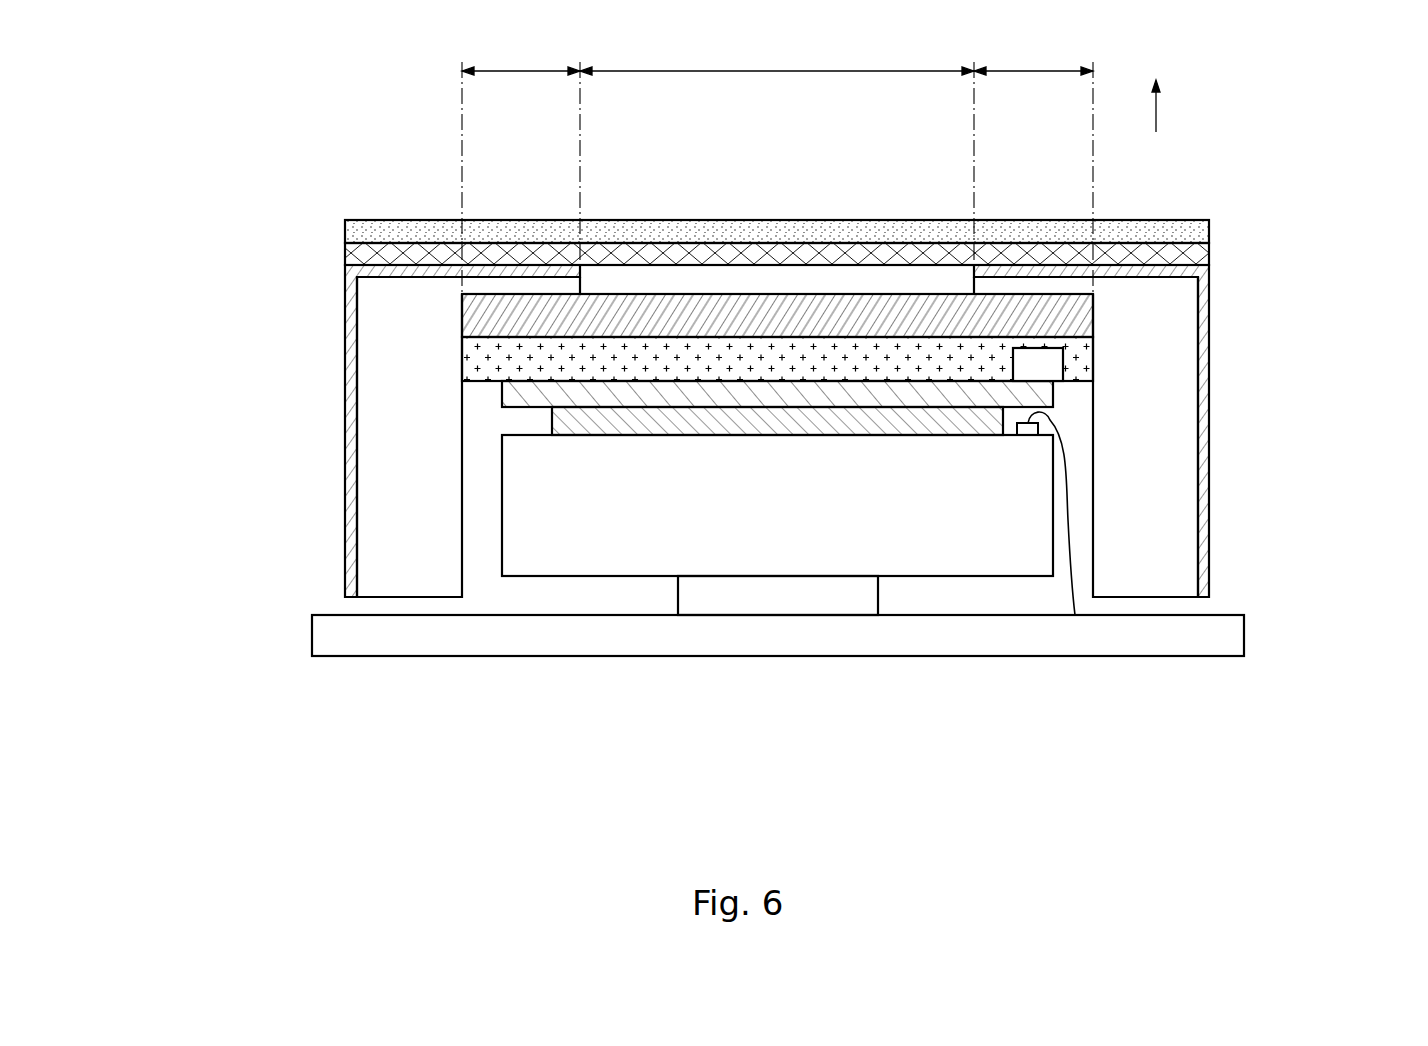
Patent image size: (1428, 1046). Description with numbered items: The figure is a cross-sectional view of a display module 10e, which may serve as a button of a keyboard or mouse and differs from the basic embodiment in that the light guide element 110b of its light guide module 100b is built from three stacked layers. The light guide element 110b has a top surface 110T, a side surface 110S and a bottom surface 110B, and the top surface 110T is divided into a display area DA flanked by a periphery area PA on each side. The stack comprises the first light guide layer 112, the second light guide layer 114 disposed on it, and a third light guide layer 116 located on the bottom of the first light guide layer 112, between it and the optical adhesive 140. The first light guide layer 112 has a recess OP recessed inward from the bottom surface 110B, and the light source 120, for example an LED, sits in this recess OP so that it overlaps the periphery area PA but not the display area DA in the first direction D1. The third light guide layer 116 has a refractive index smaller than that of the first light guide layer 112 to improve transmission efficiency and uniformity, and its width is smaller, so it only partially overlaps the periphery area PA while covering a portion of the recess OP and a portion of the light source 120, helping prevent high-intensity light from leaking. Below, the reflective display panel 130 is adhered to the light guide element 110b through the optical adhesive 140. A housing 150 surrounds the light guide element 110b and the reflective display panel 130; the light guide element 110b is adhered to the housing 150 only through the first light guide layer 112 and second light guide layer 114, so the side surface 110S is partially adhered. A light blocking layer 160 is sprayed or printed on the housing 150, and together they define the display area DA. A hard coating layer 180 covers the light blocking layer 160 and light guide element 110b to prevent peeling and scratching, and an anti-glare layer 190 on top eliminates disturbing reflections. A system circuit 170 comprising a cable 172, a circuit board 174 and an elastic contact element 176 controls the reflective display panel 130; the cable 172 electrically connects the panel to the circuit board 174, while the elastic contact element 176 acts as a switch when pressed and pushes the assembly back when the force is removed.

The display module 10e is at (250, 31).
The light guide module 100b is at (232, 68).
The light guide element 110b is at (942, 330).
The top surface 110T is at (1097, 243).
The side surface 110S is at (1093, 370).
The bottom surface 110B is at (1078, 380).
The first light guide layer 112 is at (1078, 360).
The second light guide layer 114 is at (1075, 315).
The third light guide layer 116 is at (1053, 398).
The light source 120 is at (1025, 358).
The reflective display panel 130 is at (560, 517).
The optical adhesive 140 is at (578, 422).
The housing 150 is at (402, 368).
The light blocking layer 160 is at (348, 315).
The system circuit 170 is at (778, 593).
The cable 172 is at (1070, 592).
The circuit board 174 is at (940, 632).
The elastic contact element 176 is at (840, 598).
The hard coating layer 180 is at (353, 252).
The anti-glare layer 190 is at (353, 230).
The recess OP is at (1000, 359).
The periphery area PA is at (520, 68).
The display area DA is at (773, 68).
The first direction D1 is at (1158, 110).